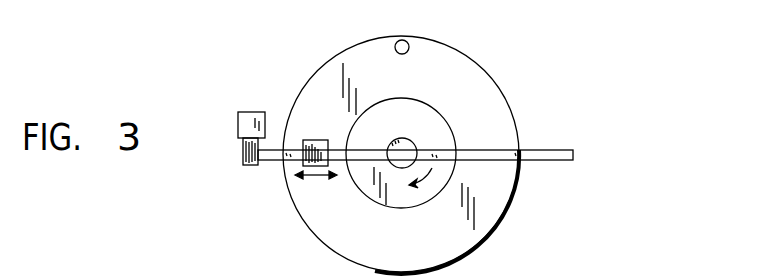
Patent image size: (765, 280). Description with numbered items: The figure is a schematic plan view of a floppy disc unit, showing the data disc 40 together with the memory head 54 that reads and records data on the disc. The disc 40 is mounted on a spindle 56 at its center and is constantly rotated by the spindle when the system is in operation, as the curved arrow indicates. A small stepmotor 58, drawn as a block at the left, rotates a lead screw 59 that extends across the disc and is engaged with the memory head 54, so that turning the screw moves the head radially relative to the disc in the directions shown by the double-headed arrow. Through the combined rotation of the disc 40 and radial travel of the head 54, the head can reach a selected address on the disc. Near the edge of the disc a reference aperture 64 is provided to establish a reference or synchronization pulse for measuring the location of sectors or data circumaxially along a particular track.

The data disc 40 is at (502, 114).
The memory head 54 is at (328, 140).
The spindle 56 is at (411, 126).
The stepmotor 58 is at (238, 121).
The lead screw 59 is at (275, 158).
The reference aperture 64 is at (401, 40).